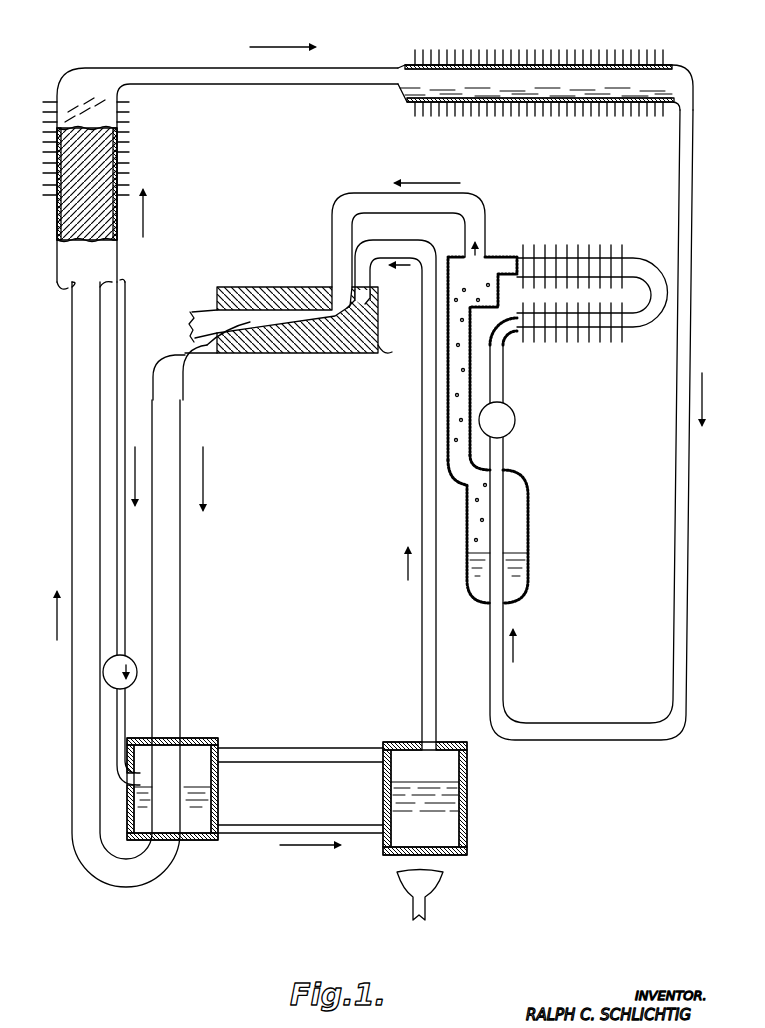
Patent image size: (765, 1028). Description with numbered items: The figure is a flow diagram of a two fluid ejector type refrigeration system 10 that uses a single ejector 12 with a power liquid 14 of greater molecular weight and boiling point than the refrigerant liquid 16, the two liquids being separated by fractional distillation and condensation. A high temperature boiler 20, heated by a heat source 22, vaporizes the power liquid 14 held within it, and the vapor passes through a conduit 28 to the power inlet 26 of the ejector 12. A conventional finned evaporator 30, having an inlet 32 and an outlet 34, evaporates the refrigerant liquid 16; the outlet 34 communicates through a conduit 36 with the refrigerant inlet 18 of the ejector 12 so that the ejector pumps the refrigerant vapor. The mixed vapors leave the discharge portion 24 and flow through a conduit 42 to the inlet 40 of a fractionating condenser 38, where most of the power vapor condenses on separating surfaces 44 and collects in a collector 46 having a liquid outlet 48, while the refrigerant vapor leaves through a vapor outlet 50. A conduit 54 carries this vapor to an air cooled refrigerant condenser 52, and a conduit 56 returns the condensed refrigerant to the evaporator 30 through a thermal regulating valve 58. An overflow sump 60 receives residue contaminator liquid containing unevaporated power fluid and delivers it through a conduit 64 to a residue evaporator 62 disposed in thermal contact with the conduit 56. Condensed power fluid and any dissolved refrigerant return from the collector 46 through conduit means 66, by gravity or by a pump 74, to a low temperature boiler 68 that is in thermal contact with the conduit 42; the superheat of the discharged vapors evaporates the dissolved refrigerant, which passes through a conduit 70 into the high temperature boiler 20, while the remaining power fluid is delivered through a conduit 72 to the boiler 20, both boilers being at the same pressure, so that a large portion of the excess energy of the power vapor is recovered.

The two fluid ejector type refrigeration system 10 is at (318, 525).
The ejector 12 is at (392, 379).
The power liquid 14 is at (448, 782).
The refrigerant liquid 16 is at (672, 74).
The refrigerant inlet 18 is at (333, 286).
The high temperature boiler 20 is at (466, 786).
The heat source 22 is at (440, 884).
The discharge portion 24 is at (205, 348).
The power inlet 26 is at (370, 294).
The conduit 28 is at (422, 506).
The finned evaporator 30 is at (647, 363).
The inlet 32 is at (522, 333).
The outlet 34 is at (500, 258).
The conduit 36 is at (472, 205).
The fractionating condenser 38 is at (302, 183).
The inlet 40 is at (70, 288).
The conduit 42 is at (183, 587).
The separating surfaces 44 is at (72, 152).
The collector 46 is at (58, 280).
The liquid outlet 48 is at (126, 284).
The vapor outlet 50 is at (110, 82).
The air cooled refrigerant condenser 52 is at (458, 106).
The conduit 54 is at (280, 85).
The conduit 56 is at (693, 310).
The thermal regulating valve 58 is at (515, 428).
The overflow sump 60 is at (478, 308).
The residue evaporator 62 is at (530, 505).
The conduit 64 is at (466, 352).
The conduit means 66 is at (125, 398).
The low temperature boiler 68 is at (185, 842).
The conduit 70 is at (320, 748).
The conduit 72 is at (288, 826).
The pump 74 is at (103, 672).